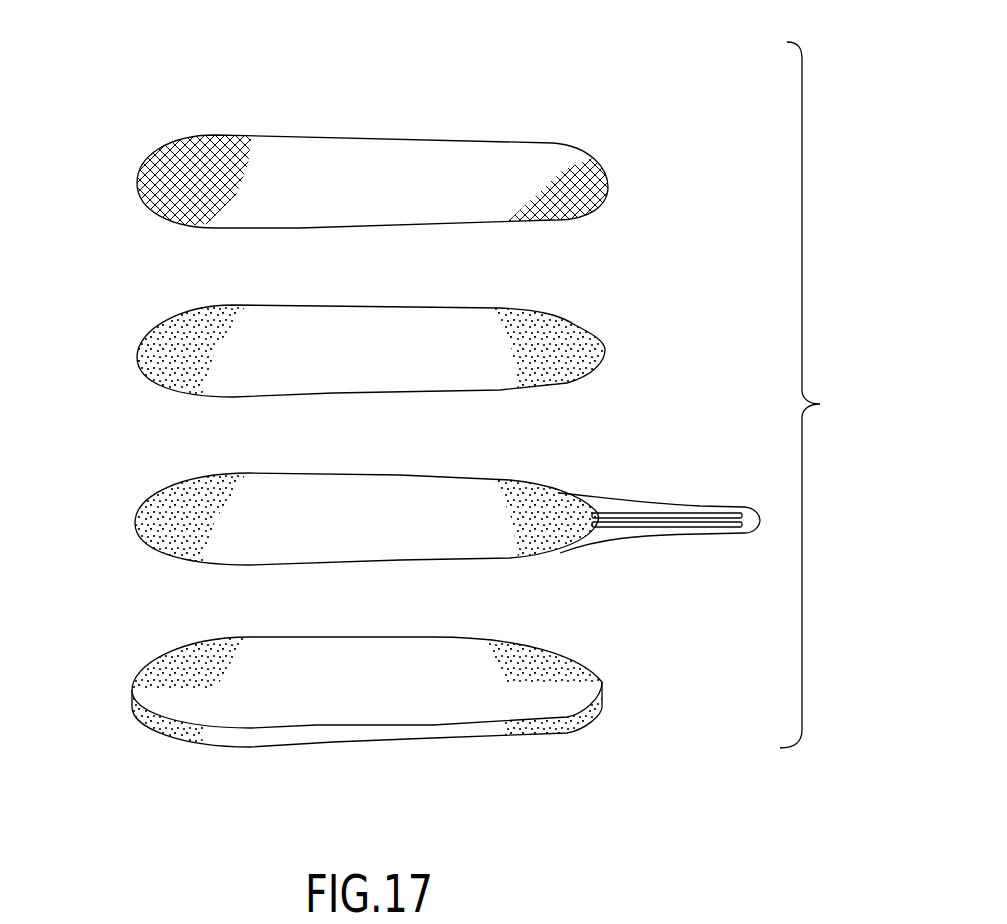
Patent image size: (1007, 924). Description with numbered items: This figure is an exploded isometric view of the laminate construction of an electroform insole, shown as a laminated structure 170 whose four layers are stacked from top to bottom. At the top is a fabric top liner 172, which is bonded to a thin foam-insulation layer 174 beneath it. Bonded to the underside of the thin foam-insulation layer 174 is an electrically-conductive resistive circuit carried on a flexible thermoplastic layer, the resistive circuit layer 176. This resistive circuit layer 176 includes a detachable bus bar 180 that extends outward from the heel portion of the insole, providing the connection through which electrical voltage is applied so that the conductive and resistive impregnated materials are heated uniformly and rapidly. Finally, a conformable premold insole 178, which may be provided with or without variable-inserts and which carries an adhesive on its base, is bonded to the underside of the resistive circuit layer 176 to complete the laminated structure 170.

The laminated structure 170 is at (825, 395).
The fabric top liner 172 is at (333, 157).
The thin foam-insulation layer 174 is at (153, 357).
The resistive circuit layer 176 is at (157, 520).
The conformable premold insole 178 is at (163, 683).
The detachable bus bar 180 is at (658, 508).